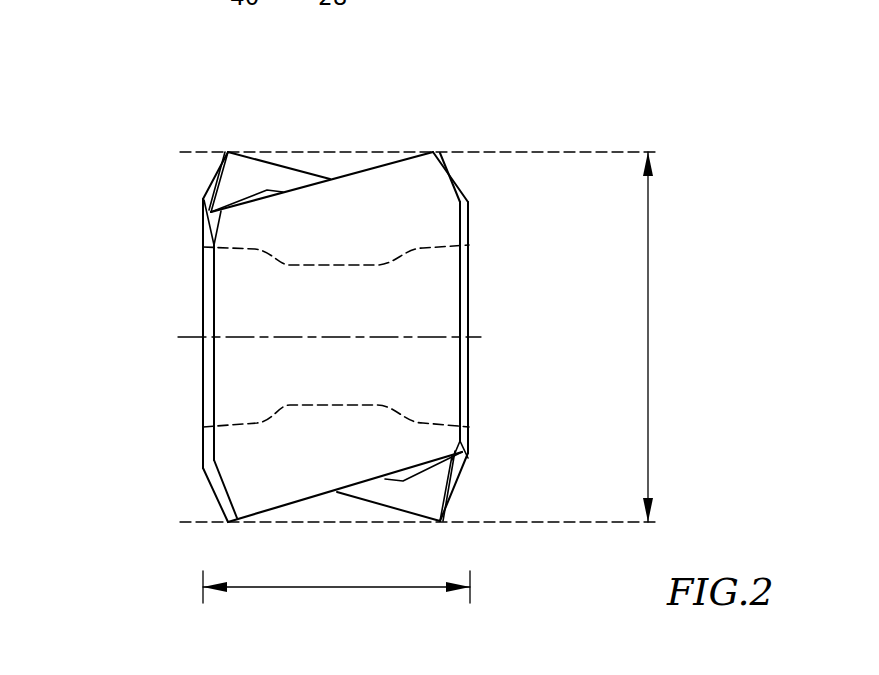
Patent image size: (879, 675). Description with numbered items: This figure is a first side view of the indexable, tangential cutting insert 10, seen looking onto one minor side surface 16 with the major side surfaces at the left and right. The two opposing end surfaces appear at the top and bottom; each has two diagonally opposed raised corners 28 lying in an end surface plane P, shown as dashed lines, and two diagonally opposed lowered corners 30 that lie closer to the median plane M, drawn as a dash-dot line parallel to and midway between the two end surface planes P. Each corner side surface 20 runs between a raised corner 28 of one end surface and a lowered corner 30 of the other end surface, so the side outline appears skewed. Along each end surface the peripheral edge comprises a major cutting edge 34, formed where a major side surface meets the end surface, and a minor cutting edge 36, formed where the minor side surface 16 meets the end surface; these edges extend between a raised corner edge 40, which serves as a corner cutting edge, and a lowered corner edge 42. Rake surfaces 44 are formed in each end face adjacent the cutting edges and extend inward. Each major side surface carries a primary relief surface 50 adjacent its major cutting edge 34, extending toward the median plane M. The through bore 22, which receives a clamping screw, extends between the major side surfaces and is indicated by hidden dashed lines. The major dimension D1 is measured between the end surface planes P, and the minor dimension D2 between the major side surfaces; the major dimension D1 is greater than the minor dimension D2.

The cutting insert 10 is at (592, 48).
The minor side surface 16 is at (423, 292).
The corner side surface 20 is at (208, 290).
The through bore 22 is at (230, 423).
The raised corner 28 is at (228, 152).
The lowered corner 30 is at (203, 207).
The major cutting edge 34 is at (213, 183).
The minor cutting edge 36 is at (297, 168).
The raised corner edge 40 is at (228, 152).
The lowered corner edge 42 is at (203, 208).
The rake surface 44 is at (245, 175).
The primary relief surface 50 is at (207, 190).
The end surface plane P is at (603, 152).
The median plane M is at (477, 330).
The major dimension D1 is at (670, 337).
The minor dimension D2 is at (336, 581).